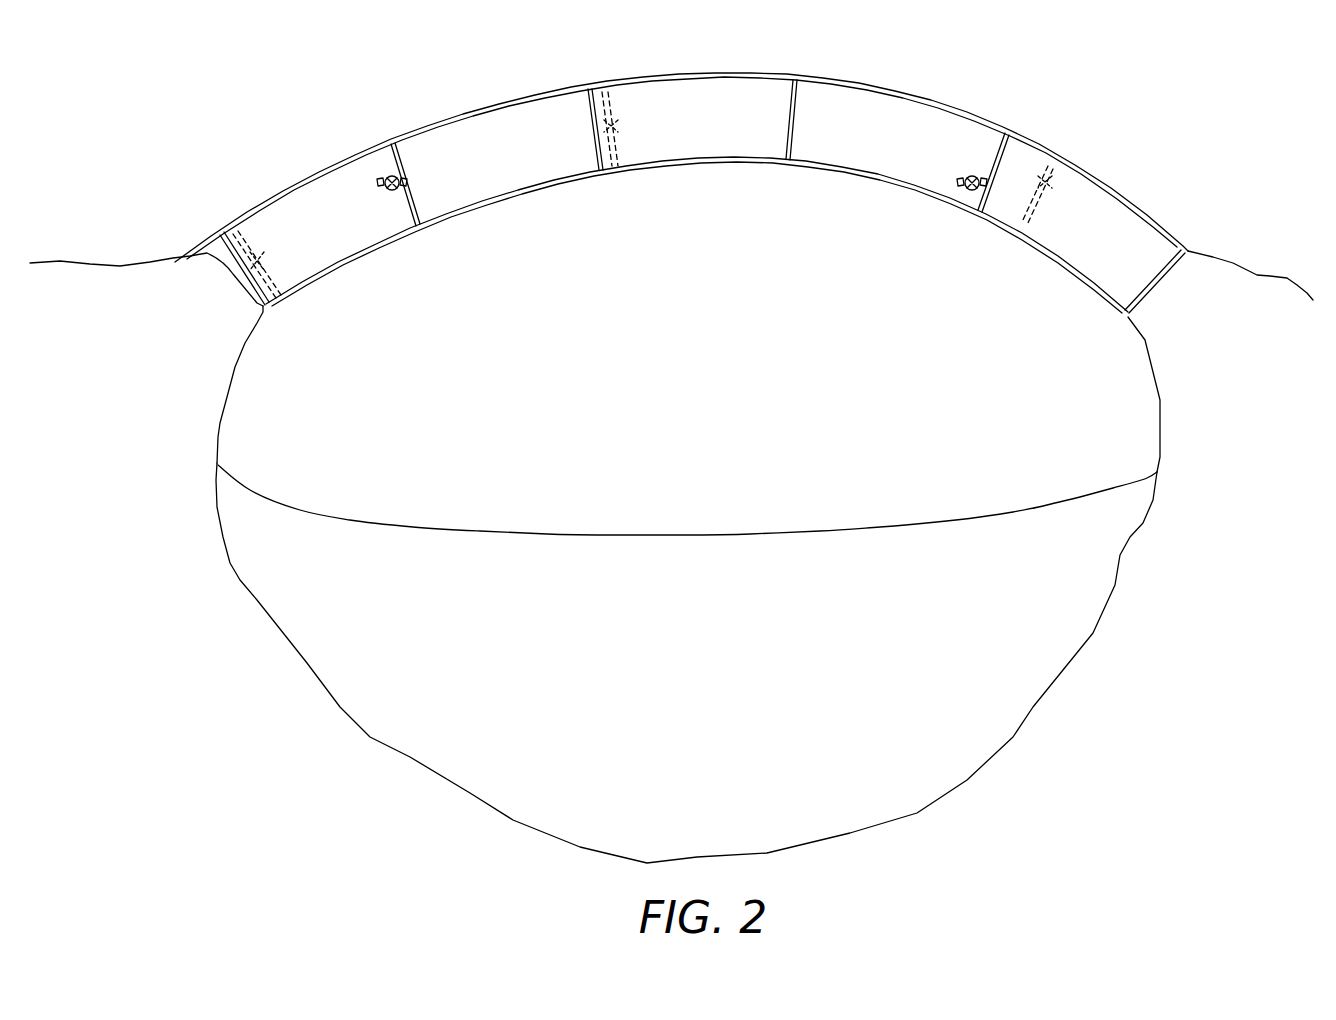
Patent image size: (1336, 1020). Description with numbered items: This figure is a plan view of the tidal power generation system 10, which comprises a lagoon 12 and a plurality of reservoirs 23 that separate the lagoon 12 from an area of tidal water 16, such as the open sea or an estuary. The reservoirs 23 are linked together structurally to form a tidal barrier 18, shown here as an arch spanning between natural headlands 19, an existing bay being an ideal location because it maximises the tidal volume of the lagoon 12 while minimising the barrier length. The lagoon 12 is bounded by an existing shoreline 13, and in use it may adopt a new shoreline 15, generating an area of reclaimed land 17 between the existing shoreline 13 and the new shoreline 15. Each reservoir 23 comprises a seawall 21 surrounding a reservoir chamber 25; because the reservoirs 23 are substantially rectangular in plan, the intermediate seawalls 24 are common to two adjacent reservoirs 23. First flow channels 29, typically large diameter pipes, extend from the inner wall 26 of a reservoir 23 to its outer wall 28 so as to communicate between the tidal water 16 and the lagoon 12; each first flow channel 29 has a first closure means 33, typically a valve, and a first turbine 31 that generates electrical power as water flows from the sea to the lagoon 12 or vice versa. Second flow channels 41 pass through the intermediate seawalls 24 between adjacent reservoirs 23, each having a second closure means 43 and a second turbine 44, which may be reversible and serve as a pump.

The tidal power generation system 10 is at (1163, 90).
The lagoon 12 is at (690, 365).
The existing shoreline 13 is at (1013, 738).
The new shoreline 15 is at (880, 530).
The area of tidal water 16 is at (691, 180).
The area of reclaimed land 17 is at (686, 663).
The tidal barrier 18 is at (691, 180).
The natural headlands 19 is at (131, 262).
The seawall 21 is at (710, 166).
The reservoir 23 is at (347, 178).
The intermediate seawall 24 is at (422, 206).
The reservoir chamber 25 is at (328, 220).
The inner wall 26 is at (368, 263).
The outer wall 28 is at (267, 196).
The first flow channel 29 is at (285, 306).
The first turbine 31 is at (272, 246).
The first closure means 33 is at (257, 260).
The second flow channel 41 is at (420, 228).
The second closure means 43 is at (387, 177).
The second turbine 44 is at (395, 150).